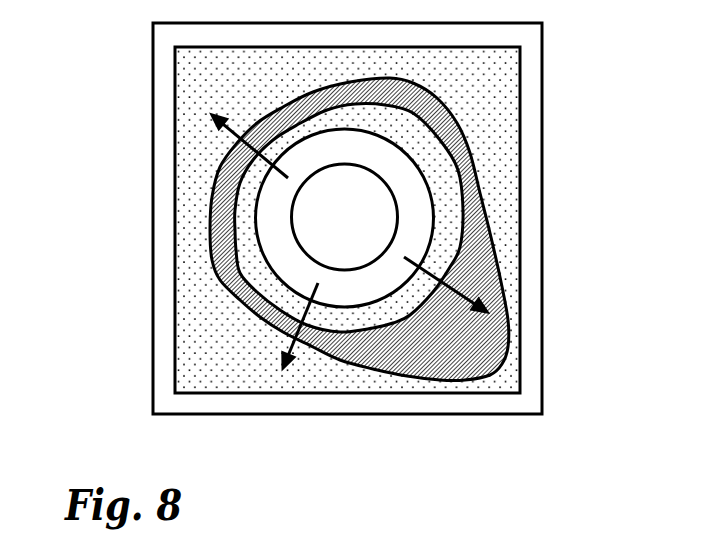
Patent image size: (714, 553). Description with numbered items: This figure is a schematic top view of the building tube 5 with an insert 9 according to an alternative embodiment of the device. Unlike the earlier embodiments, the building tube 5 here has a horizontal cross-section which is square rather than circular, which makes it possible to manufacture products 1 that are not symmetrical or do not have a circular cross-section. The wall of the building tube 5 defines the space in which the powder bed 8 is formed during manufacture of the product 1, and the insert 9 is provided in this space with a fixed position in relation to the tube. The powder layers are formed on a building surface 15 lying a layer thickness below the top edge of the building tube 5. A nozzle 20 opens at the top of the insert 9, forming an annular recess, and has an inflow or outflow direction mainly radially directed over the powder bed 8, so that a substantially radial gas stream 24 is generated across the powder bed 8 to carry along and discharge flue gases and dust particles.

The building surface 15 is at (129, 252).
The building tube 5 is at (162, 169).
The product 1 is at (216, 274).
The powder bed 8 is at (495, 167).
The nozzle 20 is at (378, 278).
The insert 9 is at (368, 200).
The gas stream 24 is at (298, 353).